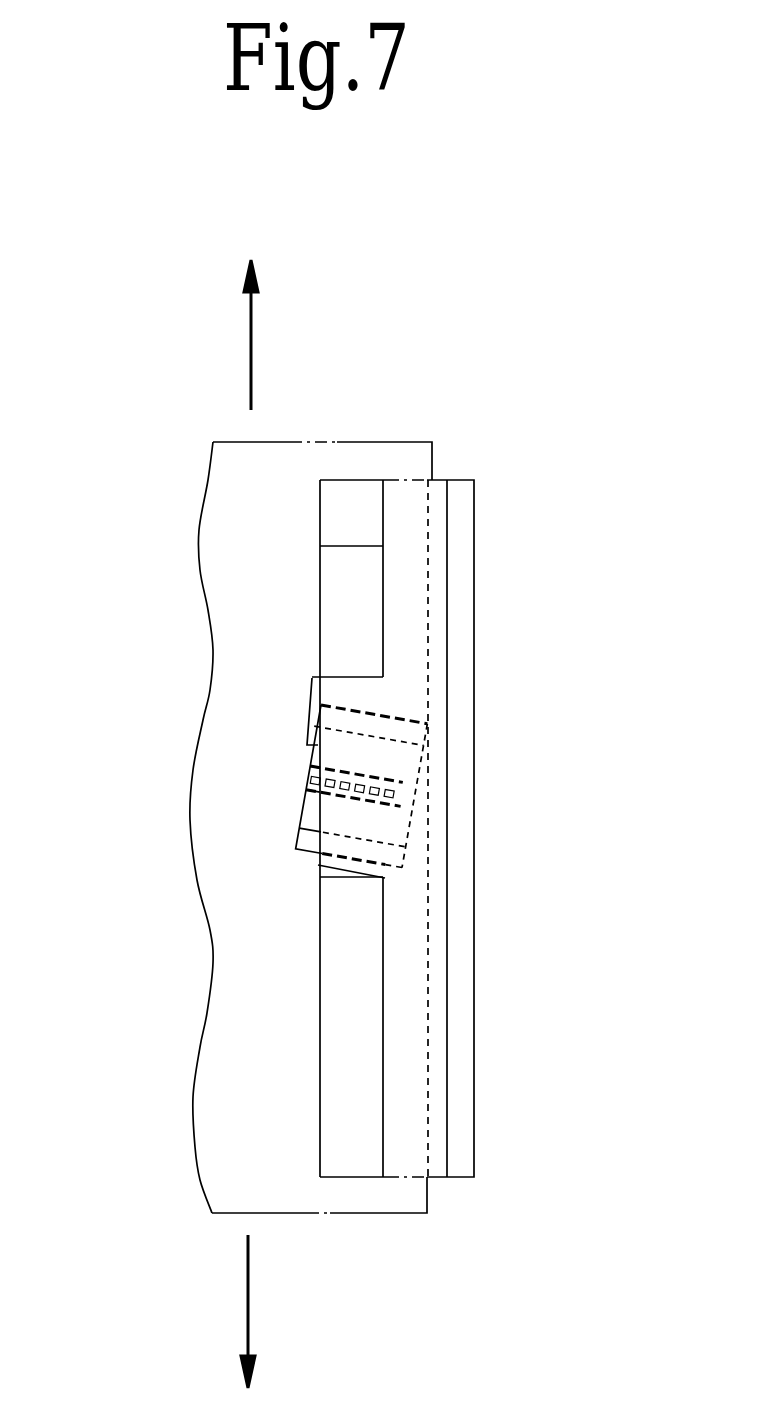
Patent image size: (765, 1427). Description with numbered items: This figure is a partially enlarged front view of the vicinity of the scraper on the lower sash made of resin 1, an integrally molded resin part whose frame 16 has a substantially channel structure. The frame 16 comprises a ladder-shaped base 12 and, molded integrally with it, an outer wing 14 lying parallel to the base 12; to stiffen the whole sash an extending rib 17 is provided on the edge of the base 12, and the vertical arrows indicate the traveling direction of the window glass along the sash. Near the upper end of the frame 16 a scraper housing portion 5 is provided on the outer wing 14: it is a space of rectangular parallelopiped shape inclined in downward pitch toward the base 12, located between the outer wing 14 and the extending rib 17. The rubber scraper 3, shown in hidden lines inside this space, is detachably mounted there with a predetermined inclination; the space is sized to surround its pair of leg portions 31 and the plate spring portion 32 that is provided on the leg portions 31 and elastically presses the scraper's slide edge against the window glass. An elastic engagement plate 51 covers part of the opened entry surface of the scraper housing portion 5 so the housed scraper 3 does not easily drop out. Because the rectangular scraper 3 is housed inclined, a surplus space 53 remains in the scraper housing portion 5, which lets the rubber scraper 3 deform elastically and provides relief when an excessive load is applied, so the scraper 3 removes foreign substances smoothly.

The lower sash made of resin 1 is at (488, 558).
The scraper 3 is at (407, 810).
The scraper housing portion 5 is at (403, 717).
The base 12 is at (437, 995).
The outer wing 14 is at (343, 1047).
The frame 16 is at (437, 1075).
The extending rib 17 is at (395, 1115).
The leg portion 31 is at (407, 733).
The plate spring portion 32 is at (405, 763).
The elastic engagement plate 51 is at (308, 720).
The surplus space 53 is at (420, 848).